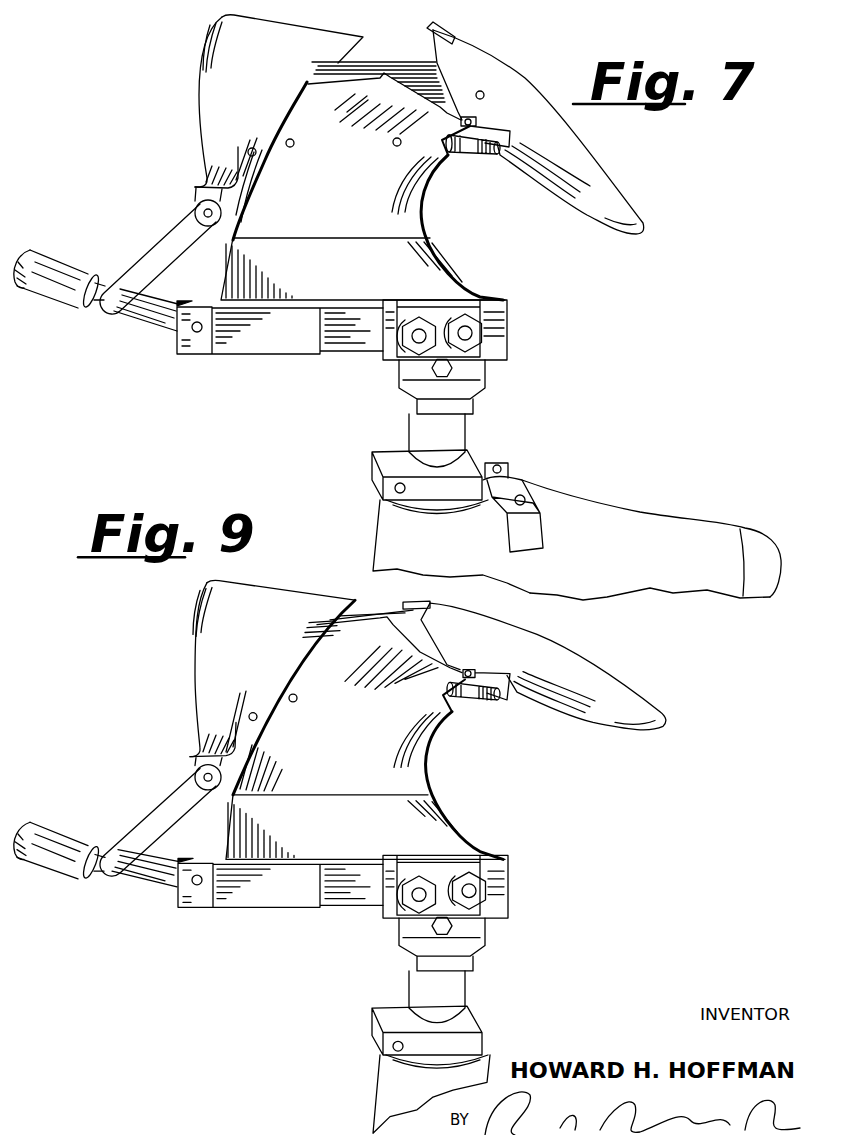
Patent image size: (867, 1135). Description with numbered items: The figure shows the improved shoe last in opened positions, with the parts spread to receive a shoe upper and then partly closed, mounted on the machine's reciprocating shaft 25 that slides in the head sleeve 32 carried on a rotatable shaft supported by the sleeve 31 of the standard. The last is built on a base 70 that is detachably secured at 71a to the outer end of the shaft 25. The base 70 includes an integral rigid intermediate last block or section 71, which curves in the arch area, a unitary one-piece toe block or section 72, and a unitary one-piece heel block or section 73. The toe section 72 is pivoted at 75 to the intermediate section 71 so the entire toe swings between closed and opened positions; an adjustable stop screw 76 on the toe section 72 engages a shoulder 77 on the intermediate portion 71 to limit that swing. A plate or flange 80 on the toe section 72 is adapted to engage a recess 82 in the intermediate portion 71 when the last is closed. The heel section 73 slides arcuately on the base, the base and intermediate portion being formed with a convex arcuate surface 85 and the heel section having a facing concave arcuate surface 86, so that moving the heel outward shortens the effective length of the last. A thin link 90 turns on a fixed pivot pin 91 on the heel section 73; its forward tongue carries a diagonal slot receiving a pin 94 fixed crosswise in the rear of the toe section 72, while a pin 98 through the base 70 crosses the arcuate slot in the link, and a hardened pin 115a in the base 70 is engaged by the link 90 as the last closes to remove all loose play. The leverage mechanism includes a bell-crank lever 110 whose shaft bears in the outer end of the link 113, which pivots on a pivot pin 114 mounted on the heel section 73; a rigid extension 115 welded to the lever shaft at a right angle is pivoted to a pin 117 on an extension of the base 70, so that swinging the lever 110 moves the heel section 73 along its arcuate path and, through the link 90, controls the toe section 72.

In FIG. 7, the heel block or section 73 is at (214, 90).
In FIG. 9, the heel block or section 73 is at (259, 668).
In FIG. 7, the thin link 90 is at (362, 67).
In FIG. 7, the recess 82 is at (399, 86).
In FIG. 9, the recess 82 is at (389, 634).
In FIG. 7, the intermediate last block or section 71 is at (335, 161).
In FIG. 9, the intermediate last block or section 71 is at (336, 697).
In FIG. 7, the base 70 is at (430, 263).
In FIG. 9, the base 70 is at (365, 786).
In FIG. 7, the fixed pivot pin 91 is at (256, 156).
In FIG. 7, the pin 98 is at (294, 146).
In FIG. 7, the hardened pin 115a is at (397, 146).
In FIG. 7, the pin 94 is at (494, 98).
In FIG. 7, the plate or flange 80 is at (436, 29).
In FIG. 9, the plate or flange 80 is at (416, 593).
In FIG. 7, the toe block or section 72 is at (562, 137).
In FIG. 9, the toe block or section 72 is at (543, 666).
In FIG. 7, the pivot 75 is at (461, 124).
In FIG. 9, the pivot 75 is at (494, 671).
In FIG. 7, the adjustable stop screw 76 is at (458, 154).
In FIG. 9, the adjustable stop screw 76 is at (478, 709).
In FIG. 7, the shoulder 77 is at (446, 160).
In FIG. 9, the shoulder 77 is at (459, 716).
In FIG. 7, the attachment point 71a is at (428, 333).
In FIG. 9, the attachment point 71a is at (426, 912).
In FIG. 7, the shaft 25 is at (448, 432).
In FIG. 9, the shaft 25 is at (459, 997).
In FIG. 7, the head sleeve 32 is at (392, 534).
In FIG. 7, the sleeve 31 is at (663, 530).
In FIG. 7, the pivot pin 114 is at (192, 206).
In FIG. 9, the pivot pin 114 is at (187, 774).
In FIG. 7, the link 113 is at (156, 250).
In FIG. 9, the link 113 is at (158, 822).
In FIG. 7, the bell-crank lever 110 is at (63, 290).
In FIG. 9, the bell-crank lever 110 is at (59, 859).
In FIG. 7, the rigid extension 115 is at (155, 316).
In FIG. 9, the rigid extension 115 is at (145, 883).
In FIG. 7, the pin 117 is at (195, 328).
In FIG. 9, the pin 117 is at (280, 903).
In FIG. 9, the concave arcuate surface 86 is at (234, 727).
In FIG. 9, the convex arcuate surface 85 is at (290, 713).